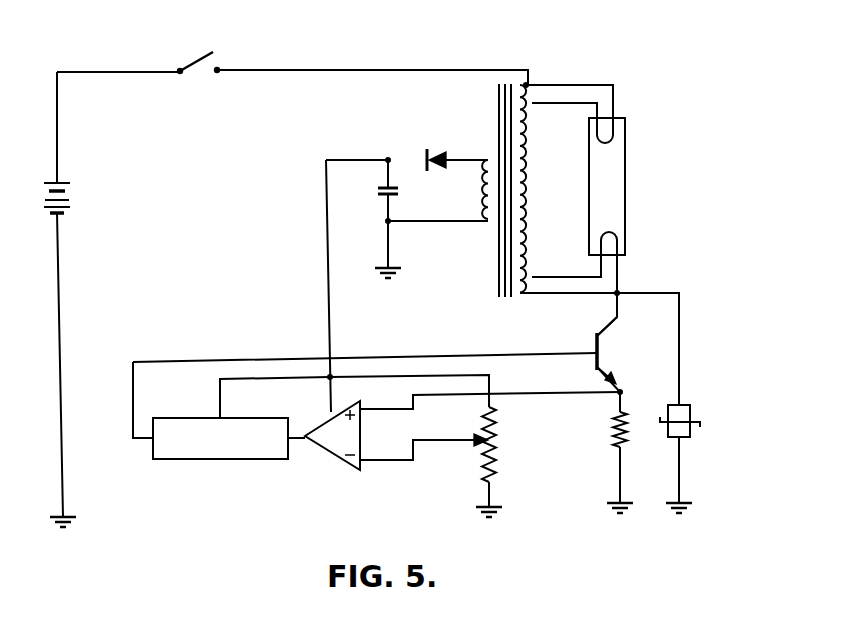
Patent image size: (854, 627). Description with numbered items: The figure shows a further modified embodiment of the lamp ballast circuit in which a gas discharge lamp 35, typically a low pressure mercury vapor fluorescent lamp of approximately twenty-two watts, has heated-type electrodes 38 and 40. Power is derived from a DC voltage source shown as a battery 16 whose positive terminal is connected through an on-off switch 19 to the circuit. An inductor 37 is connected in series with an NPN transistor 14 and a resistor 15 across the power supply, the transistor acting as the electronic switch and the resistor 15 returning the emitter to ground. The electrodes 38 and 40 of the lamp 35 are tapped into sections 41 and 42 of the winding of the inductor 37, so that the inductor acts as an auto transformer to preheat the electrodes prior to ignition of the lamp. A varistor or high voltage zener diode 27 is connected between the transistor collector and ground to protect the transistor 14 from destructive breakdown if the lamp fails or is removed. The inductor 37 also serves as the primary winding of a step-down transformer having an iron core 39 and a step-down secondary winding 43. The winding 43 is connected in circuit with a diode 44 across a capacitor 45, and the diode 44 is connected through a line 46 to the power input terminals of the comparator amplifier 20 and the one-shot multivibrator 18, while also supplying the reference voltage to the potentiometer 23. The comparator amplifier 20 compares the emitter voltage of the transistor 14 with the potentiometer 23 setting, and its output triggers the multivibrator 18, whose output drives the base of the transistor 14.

The NPN transistor 14 is at (595, 341).
The resistor 15 is at (610, 425).
The battery 16 is at (62, 194).
The one-shot multivibrator 18 is at (212, 460).
The on-off switch 19 is at (197, 60).
The comparator amplifier 20 is at (340, 458).
The potentiometer 23 is at (485, 455).
The varistor or high voltage zener diode 27 is at (689, 405).
The gas discharge lamp 35 is at (626, 194).
The inductor 37 is at (533, 203).
The electrode 38 is at (614, 141).
The iron core 39 is at (498, 97).
The electrode 40 is at (621, 249).
The winding section 41 is at (507, 98).
The winding section 42 is at (530, 287).
The step-down secondary winding 43 is at (486, 206).
The diode 44 is at (433, 149).
The capacitor 45 is at (377, 194).
The line 46 is at (283, 254).